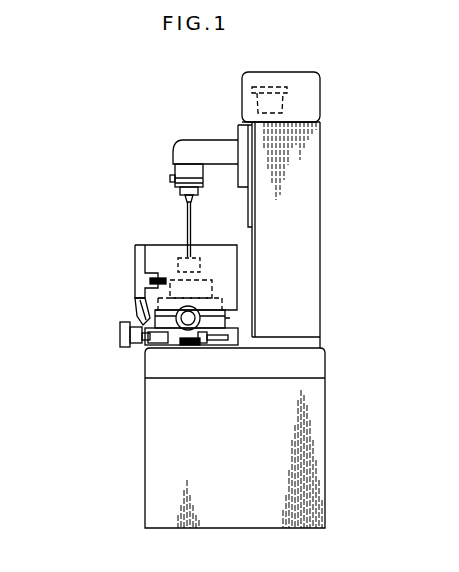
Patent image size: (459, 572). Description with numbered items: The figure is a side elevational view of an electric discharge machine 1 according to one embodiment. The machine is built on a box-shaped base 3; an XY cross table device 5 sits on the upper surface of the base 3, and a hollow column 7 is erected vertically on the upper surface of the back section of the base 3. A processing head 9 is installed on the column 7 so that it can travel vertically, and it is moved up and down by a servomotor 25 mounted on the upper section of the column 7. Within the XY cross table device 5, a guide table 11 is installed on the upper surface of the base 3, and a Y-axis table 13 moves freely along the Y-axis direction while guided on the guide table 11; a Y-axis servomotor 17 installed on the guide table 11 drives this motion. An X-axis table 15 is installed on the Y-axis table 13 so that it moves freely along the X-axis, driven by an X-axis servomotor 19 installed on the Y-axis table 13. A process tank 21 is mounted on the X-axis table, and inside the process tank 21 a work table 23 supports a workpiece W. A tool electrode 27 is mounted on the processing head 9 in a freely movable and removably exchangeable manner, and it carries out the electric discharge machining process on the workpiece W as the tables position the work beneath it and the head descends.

The electric discharge machine 1 is at (341, 219).
The box-shaped base 3 is at (157, 438).
The XY cross table device 5 is at (118, 288).
The hollow column 7 is at (313, 290).
The processing head 9 is at (171, 139).
The guide table 11 is at (176, 346).
The Y-axis table 13 is at (213, 346).
The X-axis table 15 is at (224, 316).
The Y-axis servomotor 17 is at (121, 335).
The X-axis servomotor 19 is at (183, 346).
The process tank 21 is at (135, 255).
The work table 23 is at (222, 299).
The servomotor 25 is at (287, 103).
The tool electrode 27 is at (179, 257).
The workpiece W is at (213, 282).